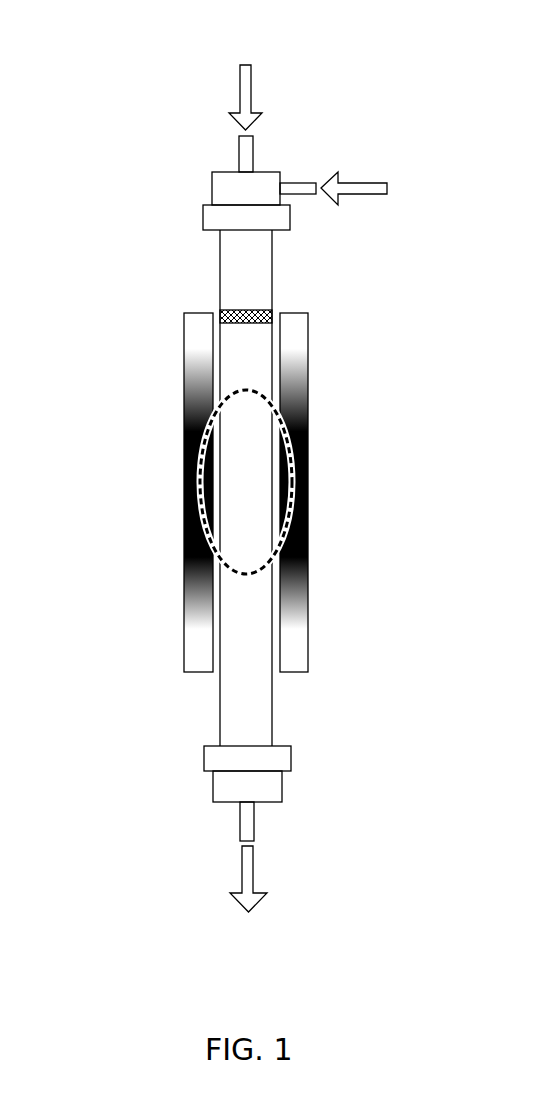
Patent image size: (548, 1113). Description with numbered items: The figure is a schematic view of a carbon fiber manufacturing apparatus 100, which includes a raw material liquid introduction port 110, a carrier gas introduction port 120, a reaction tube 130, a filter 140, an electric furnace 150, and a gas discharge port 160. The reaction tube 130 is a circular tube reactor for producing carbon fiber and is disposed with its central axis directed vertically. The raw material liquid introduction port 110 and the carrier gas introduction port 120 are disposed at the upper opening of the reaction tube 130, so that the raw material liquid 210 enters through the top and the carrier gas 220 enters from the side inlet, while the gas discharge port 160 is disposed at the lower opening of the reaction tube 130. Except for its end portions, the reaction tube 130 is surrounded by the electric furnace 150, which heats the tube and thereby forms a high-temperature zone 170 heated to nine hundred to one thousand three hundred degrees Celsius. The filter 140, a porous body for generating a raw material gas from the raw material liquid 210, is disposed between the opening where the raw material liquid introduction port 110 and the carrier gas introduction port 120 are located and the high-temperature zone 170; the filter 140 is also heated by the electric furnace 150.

The carbon fiber manufacturing apparatus 100 is at (122, 92).
The raw material liquid introduction port 110 is at (240, 155).
The carrier gas introduction port 120 is at (307, 190).
The reaction tube 130 is at (229, 375).
The filter 140 is at (223, 312).
The electric furnace 150 is at (193, 562).
The gas discharge port 160 is at (246, 826).
The high-temperature zone 170 is at (290, 458).
The raw material liquid 210 is at (252, 83).
The carrier gas 220 is at (362, 180).